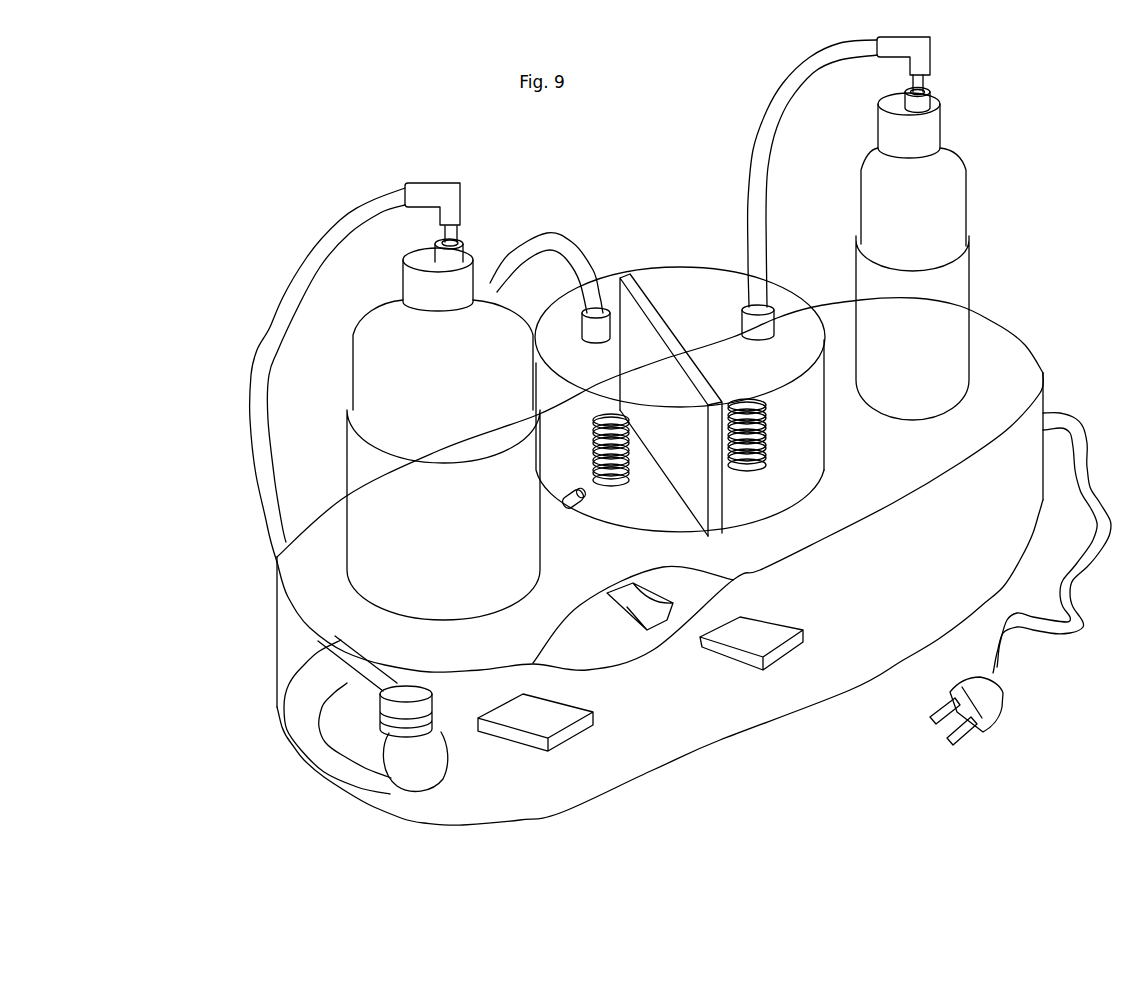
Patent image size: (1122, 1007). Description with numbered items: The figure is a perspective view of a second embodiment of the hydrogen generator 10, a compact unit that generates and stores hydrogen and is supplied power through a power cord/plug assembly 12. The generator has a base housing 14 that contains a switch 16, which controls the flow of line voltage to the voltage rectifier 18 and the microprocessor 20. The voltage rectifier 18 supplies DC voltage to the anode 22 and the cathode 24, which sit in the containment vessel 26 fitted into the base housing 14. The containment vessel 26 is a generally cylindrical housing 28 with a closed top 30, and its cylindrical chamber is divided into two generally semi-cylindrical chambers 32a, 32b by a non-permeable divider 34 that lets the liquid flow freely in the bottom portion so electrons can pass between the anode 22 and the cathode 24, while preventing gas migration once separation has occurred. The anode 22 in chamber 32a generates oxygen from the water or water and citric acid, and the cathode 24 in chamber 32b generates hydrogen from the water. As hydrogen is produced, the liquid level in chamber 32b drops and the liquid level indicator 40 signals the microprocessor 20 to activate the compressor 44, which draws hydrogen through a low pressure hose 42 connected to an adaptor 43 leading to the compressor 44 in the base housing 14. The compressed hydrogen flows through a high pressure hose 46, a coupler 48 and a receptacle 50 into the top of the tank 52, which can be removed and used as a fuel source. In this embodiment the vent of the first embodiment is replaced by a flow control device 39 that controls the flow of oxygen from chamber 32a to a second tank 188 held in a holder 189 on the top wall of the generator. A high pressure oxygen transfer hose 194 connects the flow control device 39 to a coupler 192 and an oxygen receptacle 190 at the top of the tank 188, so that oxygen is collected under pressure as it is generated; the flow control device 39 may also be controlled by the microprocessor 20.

The generator 10 is at (993, 322).
The power cord/plug assembly 12 is at (1053, 413).
The base housing 14 is at (660, 763).
The switch 16 is at (630, 607).
The voltage rectifier 18 is at (517, 737).
The microprocessor 20 is at (773, 653).
The anode 22 is at (815, 425).
The cathode 24 is at (613, 483).
The containment vessel 26 is at (823, 363).
The cylindrical housing 28 is at (782, 292).
The closed top 30 is at (710, 290).
The semi-cylindrical chamber 32a is at (758, 500).
The semi-cylindrical chamber 32b is at (583, 468).
The non-permeable divider 34 is at (634, 274).
The flow control device 39 is at (807, 300).
The liquid level indicator 40 is at (573, 507).
The low pressure hose 42 is at (580, 260).
The adaptor 43 is at (600, 345).
The compressor 44 is at (411, 781).
The high pressure hose 46 is at (305, 257).
The coupler 48 is at (457, 190).
The receptacle 50 is at (470, 250).
The tank 52 is at (373, 343).
The tank 188 is at (942, 238).
The holder 189 is at (975, 260).
The oxygen receptacle 190 is at (933, 100).
The coupler 192 is at (923, 52).
The high pressure oxygen transfer hose 194 is at (770, 127).